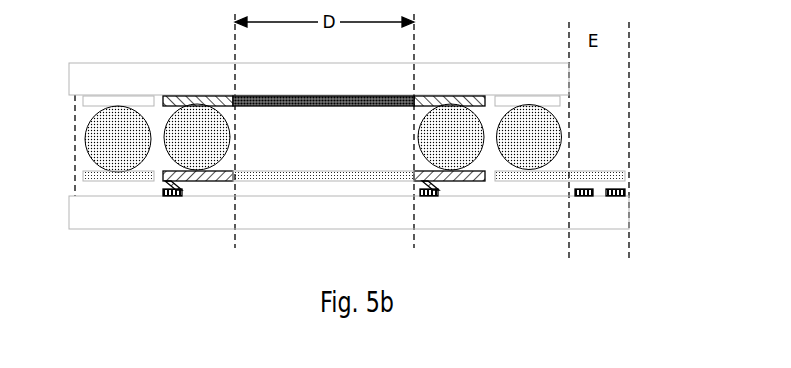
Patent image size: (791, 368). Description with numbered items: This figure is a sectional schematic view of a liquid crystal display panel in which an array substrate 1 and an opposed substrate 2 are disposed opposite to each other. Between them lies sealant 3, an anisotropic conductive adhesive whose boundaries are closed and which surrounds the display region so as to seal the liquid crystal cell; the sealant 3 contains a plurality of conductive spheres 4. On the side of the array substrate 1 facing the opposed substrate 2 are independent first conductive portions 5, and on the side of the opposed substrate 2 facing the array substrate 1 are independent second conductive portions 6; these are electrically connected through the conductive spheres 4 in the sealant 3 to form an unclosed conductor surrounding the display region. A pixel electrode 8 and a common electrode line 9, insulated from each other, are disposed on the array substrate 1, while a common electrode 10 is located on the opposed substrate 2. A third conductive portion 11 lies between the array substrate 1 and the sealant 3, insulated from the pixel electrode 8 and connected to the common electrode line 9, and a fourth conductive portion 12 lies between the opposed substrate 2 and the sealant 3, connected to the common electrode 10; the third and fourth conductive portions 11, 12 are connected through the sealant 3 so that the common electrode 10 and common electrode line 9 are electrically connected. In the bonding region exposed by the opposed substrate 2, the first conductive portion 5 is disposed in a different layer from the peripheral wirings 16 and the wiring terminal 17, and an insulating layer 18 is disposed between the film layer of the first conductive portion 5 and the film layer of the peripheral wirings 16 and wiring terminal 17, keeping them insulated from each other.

The array substrate 1 is at (349, 226).
The opposed substrate 2 is at (319, 62).
The sealant 3 is at (82, 118).
The conductive spheres 4 is at (187, 152).
The first conductive portions 5 is at (97, 175).
The second conductive portions 6 is at (97, 100).
The pixel electrode 8 is at (323, 213).
The common electrode line 9 is at (300, 221).
The common electrode 10 is at (323, 74).
The third conductive portion 11 is at (324, 165).
The fourth conductive portion 12 is at (324, 118).
The peripheral wirings 16 is at (623, 227).
The wiring terminal 17 is at (639, 216).
The insulating layer 18 is at (647, 198).